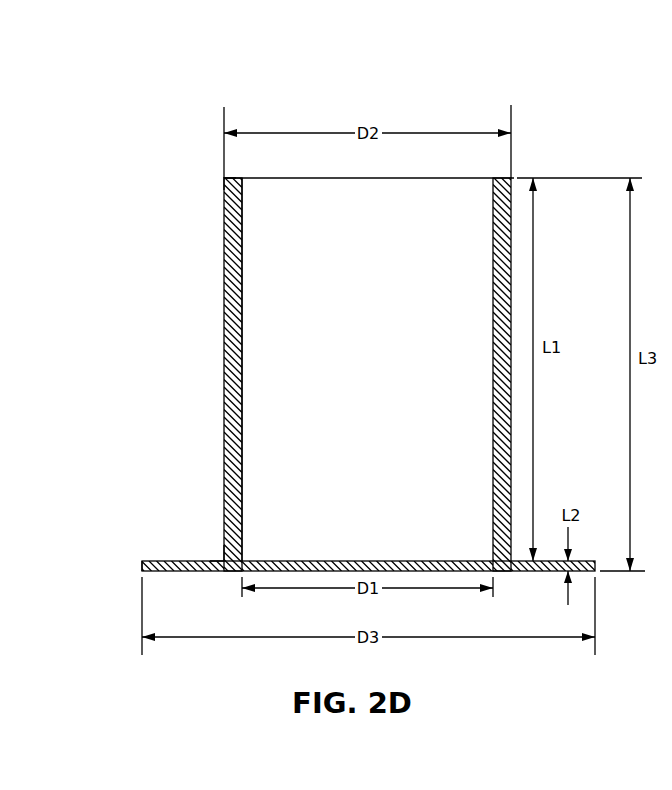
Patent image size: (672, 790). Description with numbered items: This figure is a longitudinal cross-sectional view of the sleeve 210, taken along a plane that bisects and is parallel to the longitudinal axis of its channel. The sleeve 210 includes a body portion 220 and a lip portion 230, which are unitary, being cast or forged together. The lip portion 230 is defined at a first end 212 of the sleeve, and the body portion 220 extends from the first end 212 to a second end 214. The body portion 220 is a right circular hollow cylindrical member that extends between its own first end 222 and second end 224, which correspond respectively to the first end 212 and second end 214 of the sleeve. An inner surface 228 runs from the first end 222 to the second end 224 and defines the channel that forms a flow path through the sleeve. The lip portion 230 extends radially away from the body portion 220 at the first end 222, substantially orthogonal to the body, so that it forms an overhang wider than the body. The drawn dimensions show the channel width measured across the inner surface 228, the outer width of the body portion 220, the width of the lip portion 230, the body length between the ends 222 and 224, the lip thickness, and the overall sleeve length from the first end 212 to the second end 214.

The sleeve 210 is at (188, 82).
The first end 212 is at (213, 572).
The second end 214 is at (235, 178).
The body portion 220 is at (226, 376).
The first end of body portion 222 is at (225, 561).
The second end of body portion 224 is at (224, 178).
The inner surface 228 is at (242, 228).
The lip portion 230 is at (142, 562).